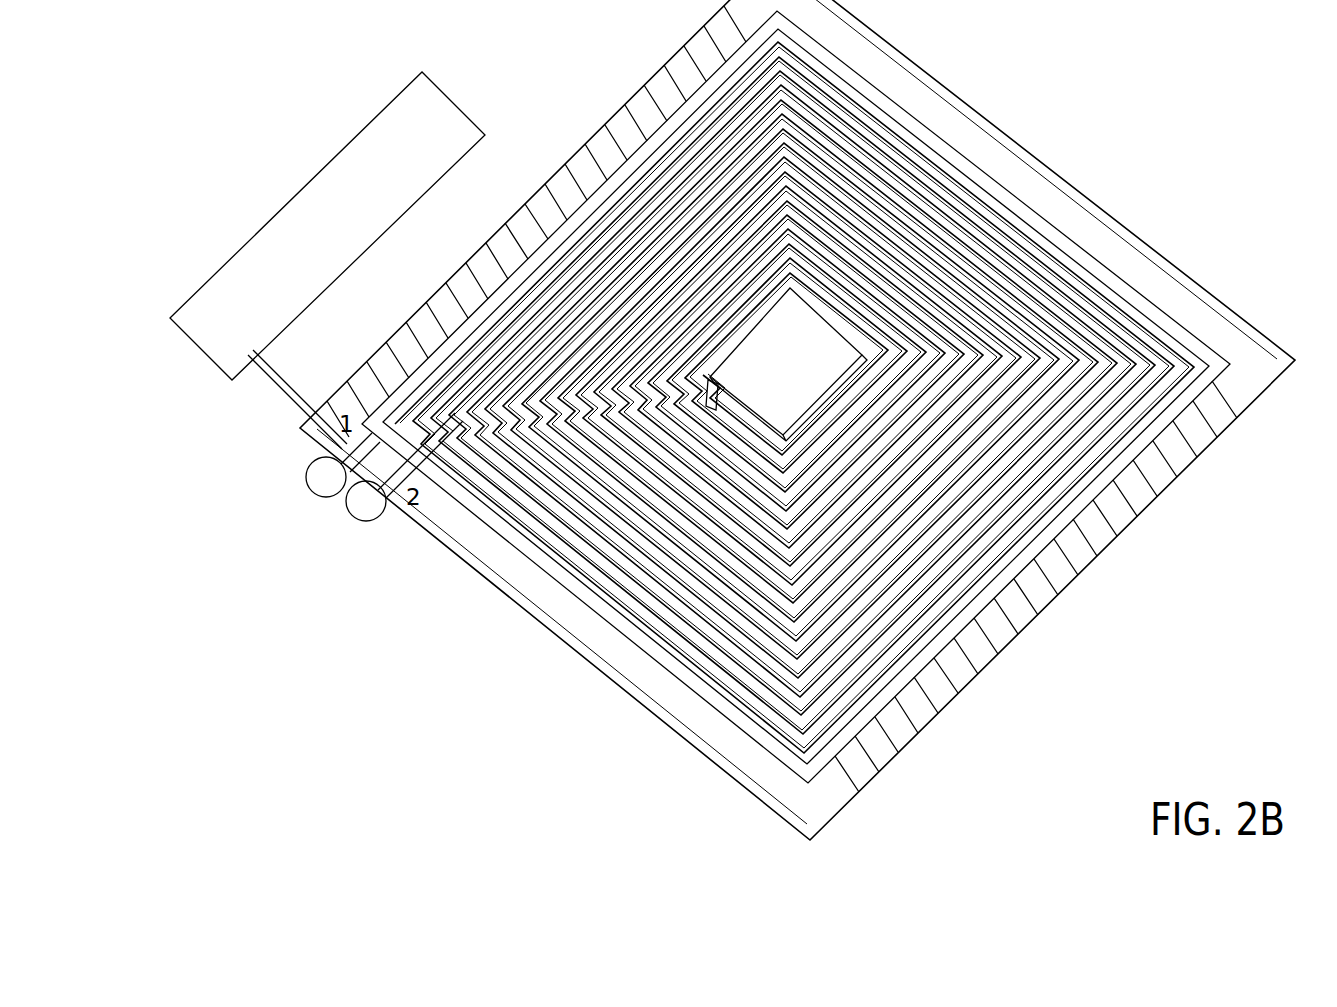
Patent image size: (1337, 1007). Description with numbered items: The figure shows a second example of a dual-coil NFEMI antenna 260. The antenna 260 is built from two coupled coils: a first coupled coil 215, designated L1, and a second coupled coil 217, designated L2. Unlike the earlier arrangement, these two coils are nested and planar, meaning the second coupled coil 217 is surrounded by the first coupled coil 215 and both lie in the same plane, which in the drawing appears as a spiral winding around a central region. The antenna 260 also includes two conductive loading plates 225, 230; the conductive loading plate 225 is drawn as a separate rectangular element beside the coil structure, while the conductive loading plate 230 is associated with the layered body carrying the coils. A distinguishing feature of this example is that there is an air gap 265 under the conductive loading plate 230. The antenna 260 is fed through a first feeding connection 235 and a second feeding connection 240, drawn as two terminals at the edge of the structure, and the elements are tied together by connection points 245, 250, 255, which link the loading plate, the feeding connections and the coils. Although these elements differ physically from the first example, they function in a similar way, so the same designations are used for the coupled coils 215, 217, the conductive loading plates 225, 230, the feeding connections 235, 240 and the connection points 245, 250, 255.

The coupled coil 215 is at (540, 292).
The coupled coil 217 is at (606, 514).
The conductive loading plate 225 is at (310, 180).
The conductive loading plate 230 is at (1030, 590).
The first feeding connection 235 is at (306, 483).
The second feeding connection 240 is at (351, 518).
The connection point 245 is at (345, 440).
The connection point 250 is at (454, 437).
The connection point 255 is at (719, 412).
The dual-coil NFEMI antenna 260 is at (1252, 113).
The air gap 265 is at (852, 390).